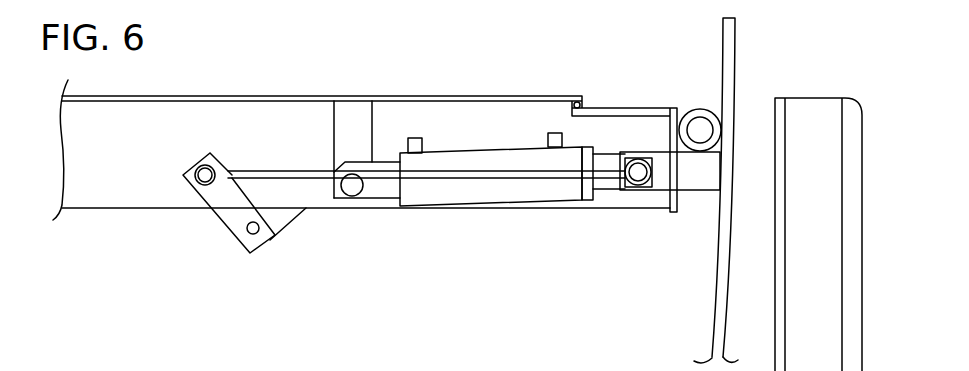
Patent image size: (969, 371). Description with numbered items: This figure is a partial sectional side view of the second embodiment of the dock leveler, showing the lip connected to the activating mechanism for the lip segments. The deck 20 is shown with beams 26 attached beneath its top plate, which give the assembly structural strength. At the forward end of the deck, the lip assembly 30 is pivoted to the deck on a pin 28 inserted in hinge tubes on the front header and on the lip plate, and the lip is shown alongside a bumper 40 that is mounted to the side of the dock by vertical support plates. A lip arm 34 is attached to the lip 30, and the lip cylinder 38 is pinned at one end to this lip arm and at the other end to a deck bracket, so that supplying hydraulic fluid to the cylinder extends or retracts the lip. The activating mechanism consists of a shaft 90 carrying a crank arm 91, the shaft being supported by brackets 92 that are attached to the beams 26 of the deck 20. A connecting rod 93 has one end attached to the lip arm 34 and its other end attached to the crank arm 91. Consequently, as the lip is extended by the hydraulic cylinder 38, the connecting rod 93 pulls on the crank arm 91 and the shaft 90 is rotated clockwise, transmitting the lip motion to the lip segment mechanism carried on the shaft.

The deck 20 is at (297, 97).
The beams 26 is at (118, 207).
The pin 28 is at (698, 112).
The lip assembly 30 is at (715, 285).
The lip arm 34 is at (703, 190).
The lip cylinder 38 is at (543, 205).
The bumper 40 is at (825, 103).
The shaft 90 is at (255, 236).
The crank arm 91 is at (230, 213).
The brackets 92 is at (296, 220).
The connecting rod 93 is at (457, 178).